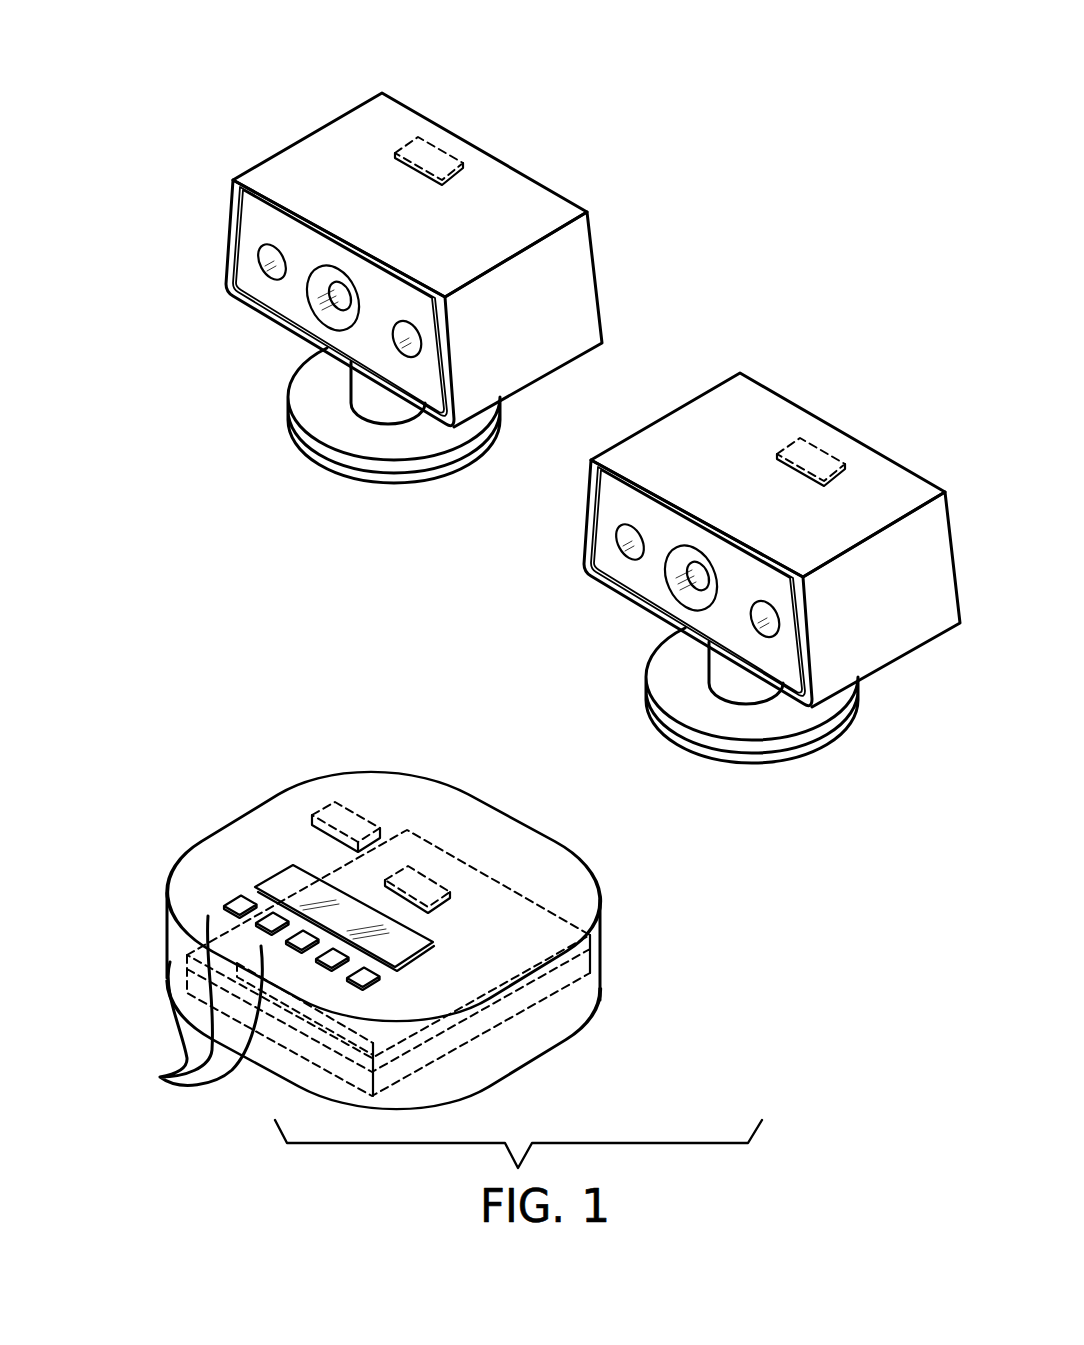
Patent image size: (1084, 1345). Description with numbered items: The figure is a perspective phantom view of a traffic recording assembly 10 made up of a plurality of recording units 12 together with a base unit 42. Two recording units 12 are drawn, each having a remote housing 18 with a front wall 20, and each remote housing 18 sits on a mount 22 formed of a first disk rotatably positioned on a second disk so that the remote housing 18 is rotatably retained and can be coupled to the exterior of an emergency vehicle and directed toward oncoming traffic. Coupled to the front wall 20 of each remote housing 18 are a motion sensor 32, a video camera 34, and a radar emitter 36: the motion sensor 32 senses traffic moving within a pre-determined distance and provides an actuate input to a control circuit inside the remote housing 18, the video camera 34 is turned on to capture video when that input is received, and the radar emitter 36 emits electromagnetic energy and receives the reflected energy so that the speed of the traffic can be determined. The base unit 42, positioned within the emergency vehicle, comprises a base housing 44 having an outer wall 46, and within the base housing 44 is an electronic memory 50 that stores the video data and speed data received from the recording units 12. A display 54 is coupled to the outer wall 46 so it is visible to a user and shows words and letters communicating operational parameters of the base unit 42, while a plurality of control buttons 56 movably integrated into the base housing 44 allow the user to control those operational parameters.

The traffic recording assembly 10 is at (135, 181).
The recording unit 12 is at (458, 95).
The remote housing 18 is at (313, 148).
The front wall 20 is at (290, 304).
The mount 22 is at (792, 800).
The motion sensor 32 is at (406, 345).
The video camera 34 is at (335, 315).
The radar emitter 36 is at (266, 254).
The base unit 42 is at (247, 806).
The base housing 44 is at (368, 773).
The outer wall 46 is at (423, 832).
The electronic memory 50 is at (542, 913).
The display 54 is at (268, 872).
The control buttons 56 is at (162, 1077).